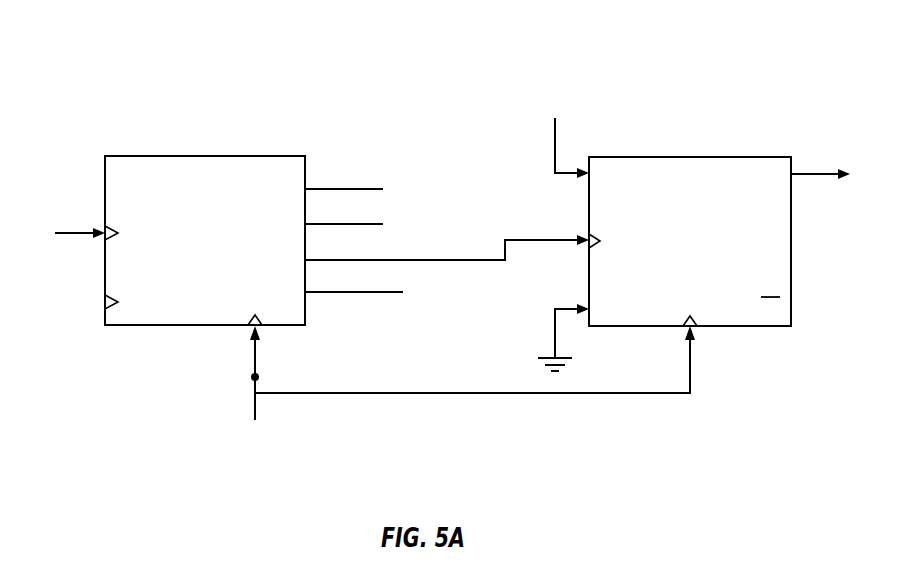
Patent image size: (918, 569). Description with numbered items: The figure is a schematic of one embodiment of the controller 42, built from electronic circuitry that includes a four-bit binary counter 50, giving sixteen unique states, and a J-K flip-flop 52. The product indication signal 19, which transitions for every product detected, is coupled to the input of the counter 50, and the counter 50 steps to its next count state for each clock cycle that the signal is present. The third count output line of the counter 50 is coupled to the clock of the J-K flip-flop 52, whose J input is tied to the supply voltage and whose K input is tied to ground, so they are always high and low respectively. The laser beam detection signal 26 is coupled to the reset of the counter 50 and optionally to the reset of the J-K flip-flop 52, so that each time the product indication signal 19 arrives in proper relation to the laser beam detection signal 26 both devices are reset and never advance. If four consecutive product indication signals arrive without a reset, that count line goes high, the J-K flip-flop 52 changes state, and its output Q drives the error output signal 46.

The controller 42 is at (368, 92).
The binary counter 50 is at (192, 207).
The J-K flip-flop 52 is at (676, 236).
The product indication signal 19 is at (66, 233).
The laser beam detection signal 26 is at (468, 387).
The error output signal 46 is at (836, 176).